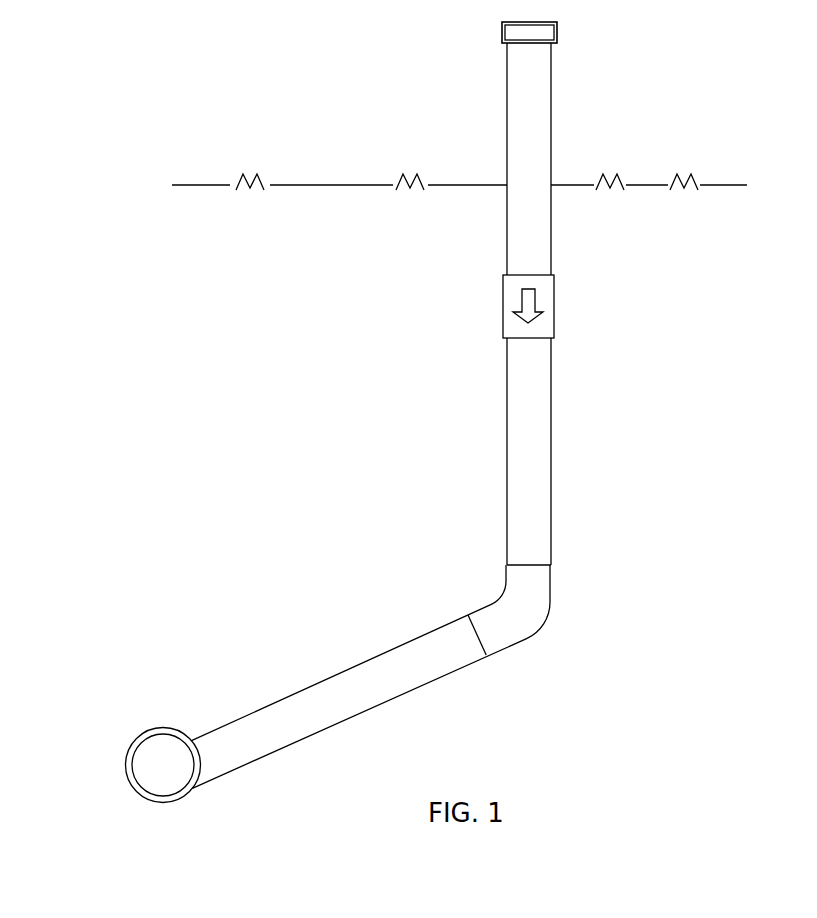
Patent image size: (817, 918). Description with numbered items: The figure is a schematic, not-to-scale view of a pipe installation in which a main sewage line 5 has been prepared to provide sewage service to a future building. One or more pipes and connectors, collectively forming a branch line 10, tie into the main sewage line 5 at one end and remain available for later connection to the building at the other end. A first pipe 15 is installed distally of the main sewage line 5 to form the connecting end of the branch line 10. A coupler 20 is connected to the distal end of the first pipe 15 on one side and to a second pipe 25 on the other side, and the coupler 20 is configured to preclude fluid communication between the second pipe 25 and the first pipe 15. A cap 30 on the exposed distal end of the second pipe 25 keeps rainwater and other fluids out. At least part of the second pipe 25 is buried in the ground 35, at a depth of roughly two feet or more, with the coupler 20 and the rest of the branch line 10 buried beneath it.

The main sewage line 5 is at (138, 746).
The branch line 10 is at (612, 664).
The first pipe 15 is at (540, 429).
The coupler 20 is at (550, 293).
The second pipe 25 is at (552, 92).
The cap 30 is at (510, 42).
The ground 35 is at (733, 185).